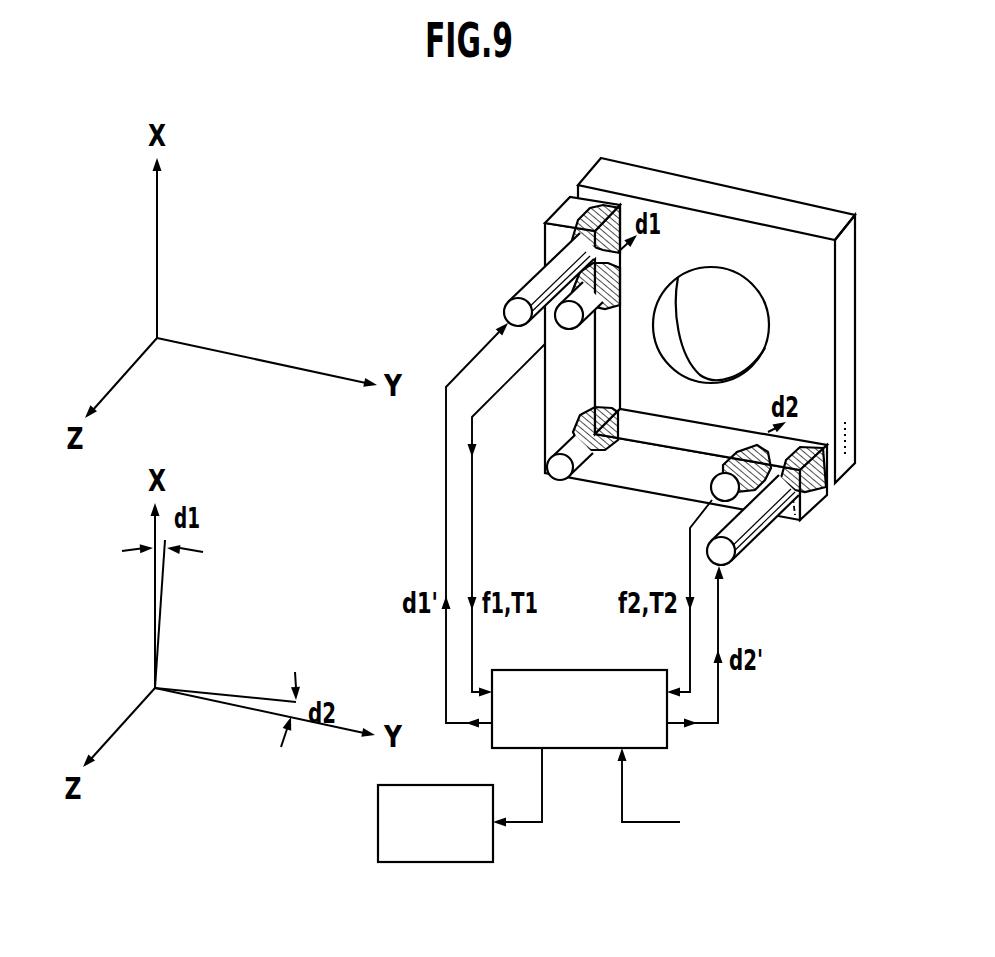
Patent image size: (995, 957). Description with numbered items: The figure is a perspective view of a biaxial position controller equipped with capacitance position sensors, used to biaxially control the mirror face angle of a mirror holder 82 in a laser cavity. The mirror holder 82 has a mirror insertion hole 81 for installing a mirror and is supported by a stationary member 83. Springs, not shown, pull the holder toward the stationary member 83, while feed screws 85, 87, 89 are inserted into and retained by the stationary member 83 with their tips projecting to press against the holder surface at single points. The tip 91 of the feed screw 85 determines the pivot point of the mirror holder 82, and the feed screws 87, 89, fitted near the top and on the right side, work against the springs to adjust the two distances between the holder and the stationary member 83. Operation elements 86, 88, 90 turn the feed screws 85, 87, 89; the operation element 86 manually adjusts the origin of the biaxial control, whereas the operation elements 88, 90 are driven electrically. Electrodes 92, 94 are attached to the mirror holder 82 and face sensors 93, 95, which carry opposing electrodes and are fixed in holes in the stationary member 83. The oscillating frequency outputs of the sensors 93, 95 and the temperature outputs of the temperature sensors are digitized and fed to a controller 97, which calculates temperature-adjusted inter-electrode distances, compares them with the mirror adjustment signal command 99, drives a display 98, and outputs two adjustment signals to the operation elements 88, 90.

The mirror insertion hole 81 is at (718, 308).
The mirror holder 82 is at (705, 195).
The stationary member 83 is at (808, 503).
The feed screw 85 is at (597, 450).
The operation element 86 is at (577, 480).
The feed screw 87 is at (558, 217).
The operation element 88 is at (530, 274).
The feed screw 89 is at (792, 520).
The operation element 90 is at (753, 540).
The tip of feed screw 91 is at (618, 413).
The electrode 92 is at (620, 281).
The sensor 93 is at (572, 329).
The electrode 94 is at (725, 445).
The sensor 95 is at (720, 490).
The controller 97 is at (585, 750).
The display 98 is at (480, 864).
The mirror adjustment signal command 99 is at (653, 826).